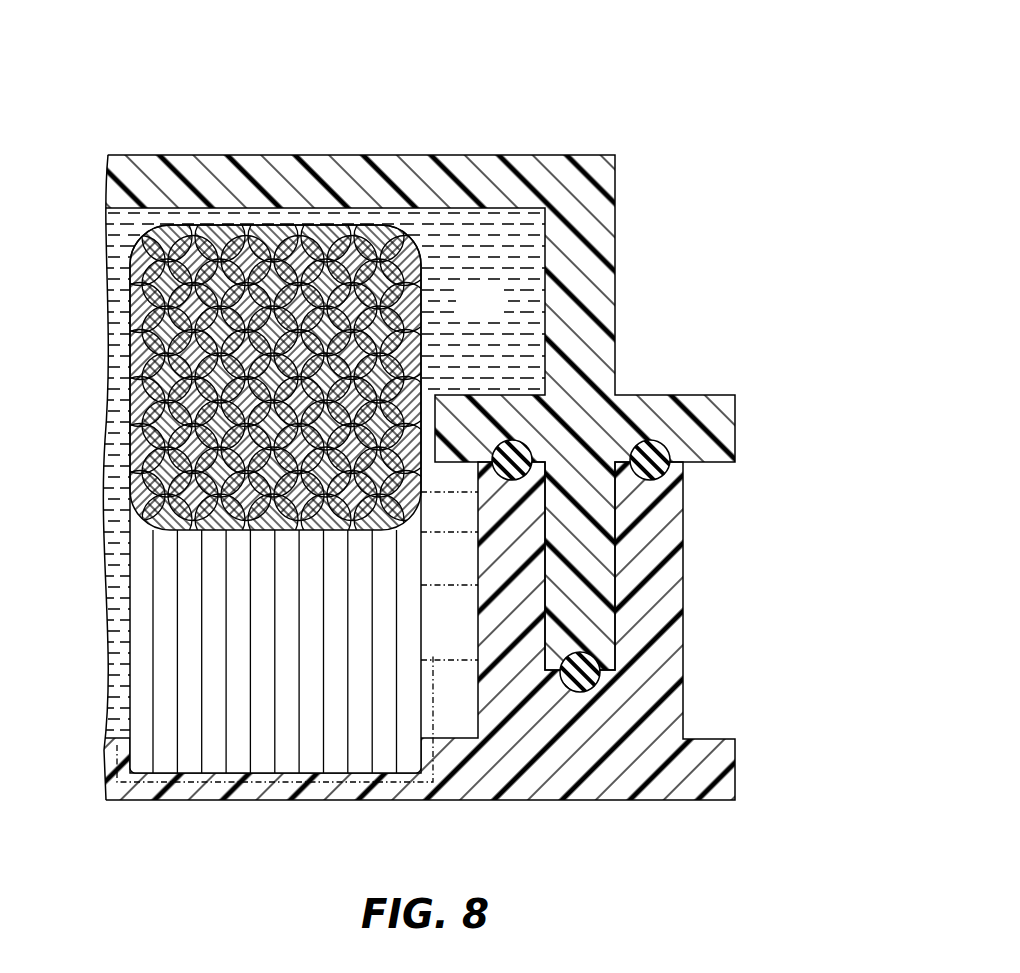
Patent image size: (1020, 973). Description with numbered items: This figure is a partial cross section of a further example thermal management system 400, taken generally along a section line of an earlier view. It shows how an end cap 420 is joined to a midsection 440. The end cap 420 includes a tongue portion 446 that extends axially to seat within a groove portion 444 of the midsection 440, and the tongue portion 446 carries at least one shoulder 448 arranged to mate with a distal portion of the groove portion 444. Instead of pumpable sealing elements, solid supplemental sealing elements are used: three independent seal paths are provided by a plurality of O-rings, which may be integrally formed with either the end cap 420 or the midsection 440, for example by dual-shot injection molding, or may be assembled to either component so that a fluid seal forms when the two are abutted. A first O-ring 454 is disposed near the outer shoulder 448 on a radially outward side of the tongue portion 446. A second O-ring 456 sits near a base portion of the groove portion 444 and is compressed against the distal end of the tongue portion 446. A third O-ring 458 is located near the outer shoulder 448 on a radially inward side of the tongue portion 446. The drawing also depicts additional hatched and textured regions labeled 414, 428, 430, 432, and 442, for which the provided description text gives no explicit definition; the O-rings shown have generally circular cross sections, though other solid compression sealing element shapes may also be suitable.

The thermal management system 400 is at (558, 68).
The bottom plate 414 is at (283, 778).
The end cap 420 is at (608, 175).
The liquid electrolyte 428 is at (498, 315).
The pouch bag 430 is at (185, 625).
The braided sleeve 432 is at (140, 285).
The midsection 440 is at (466, 666).
The foot 442 is at (723, 770).
The groove portion 444 is at (653, 568).
The tongue portion 446 is at (580, 563).
The shoulder 448 is at (672, 405).
The first O-ring 454 is at (660, 470).
The second O-ring 456 is at (592, 684).
The third O-ring 458 is at (522, 448).